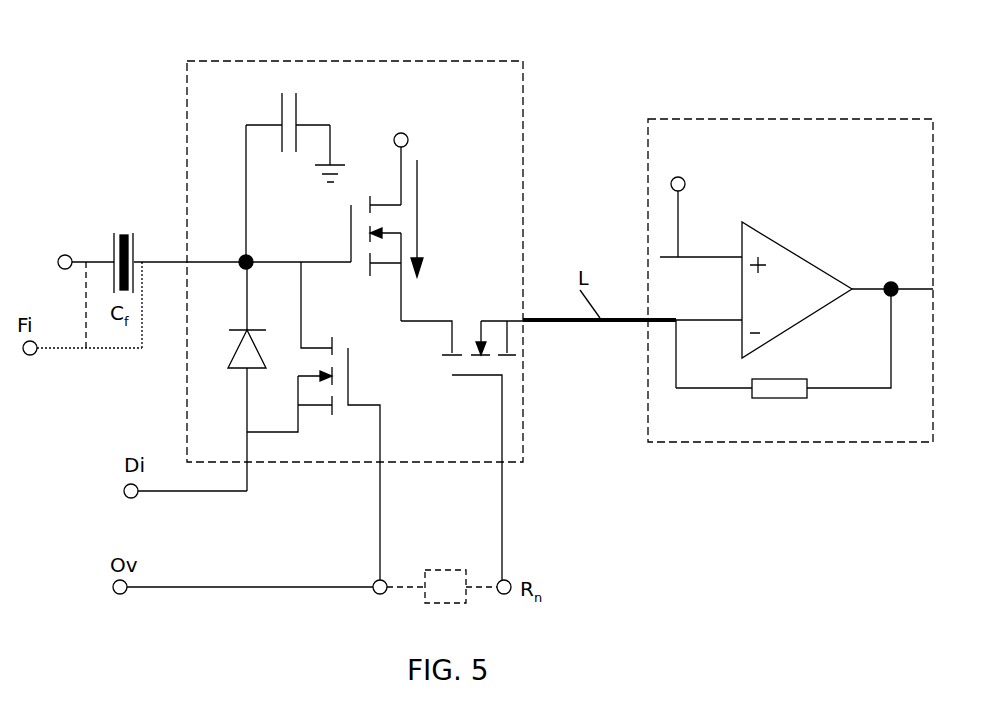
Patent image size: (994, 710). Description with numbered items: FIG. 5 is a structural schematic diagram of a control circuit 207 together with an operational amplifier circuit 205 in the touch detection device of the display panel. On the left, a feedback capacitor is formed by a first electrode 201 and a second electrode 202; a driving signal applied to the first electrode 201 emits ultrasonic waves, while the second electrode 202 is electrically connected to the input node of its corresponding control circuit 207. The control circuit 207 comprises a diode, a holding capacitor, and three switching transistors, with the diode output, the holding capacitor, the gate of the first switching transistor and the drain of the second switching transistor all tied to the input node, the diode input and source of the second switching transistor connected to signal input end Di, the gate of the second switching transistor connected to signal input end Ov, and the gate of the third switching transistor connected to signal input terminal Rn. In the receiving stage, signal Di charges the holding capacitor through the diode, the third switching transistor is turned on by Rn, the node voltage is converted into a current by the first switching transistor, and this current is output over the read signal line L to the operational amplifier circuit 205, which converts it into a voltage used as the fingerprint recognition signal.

The first electrode 201 is at (113, 250).
The second electrode 202 is at (135, 250).
The operational amplifier circuit 205 is at (820, 118).
The control circuit 207 is at (498, 60).